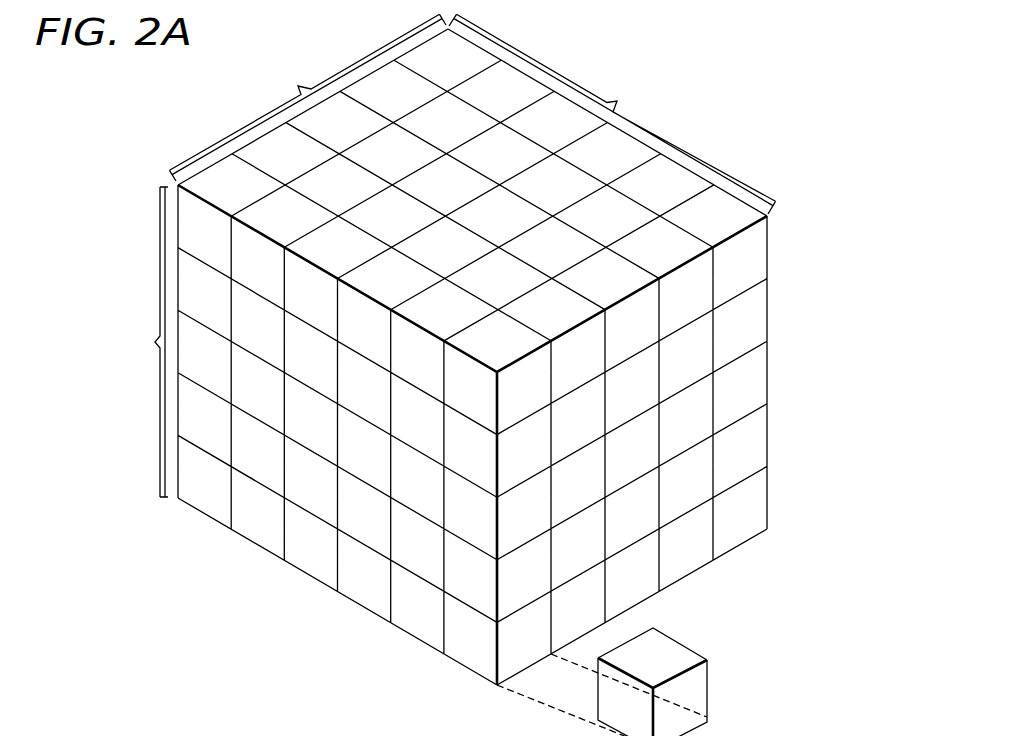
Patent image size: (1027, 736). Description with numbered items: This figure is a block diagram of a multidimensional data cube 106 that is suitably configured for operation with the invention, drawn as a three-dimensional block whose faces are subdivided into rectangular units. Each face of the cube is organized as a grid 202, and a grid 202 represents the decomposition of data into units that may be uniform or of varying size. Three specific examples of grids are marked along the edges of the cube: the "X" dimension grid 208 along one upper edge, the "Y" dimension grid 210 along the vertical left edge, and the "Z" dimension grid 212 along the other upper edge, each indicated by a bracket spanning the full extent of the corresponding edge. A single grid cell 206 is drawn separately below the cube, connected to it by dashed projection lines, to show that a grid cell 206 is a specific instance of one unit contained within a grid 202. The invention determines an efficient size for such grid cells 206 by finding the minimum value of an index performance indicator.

The multidimensional data cube 106 is at (253, 566).
The grid 202 is at (442, 255).
The grid cell 206 is at (720, 660).
The "X" dimension grid 208 is at (695, 136).
The "Y" dimension grid 210 is at (135, 447).
The "Z" dimension grid 212 is at (208, 132).